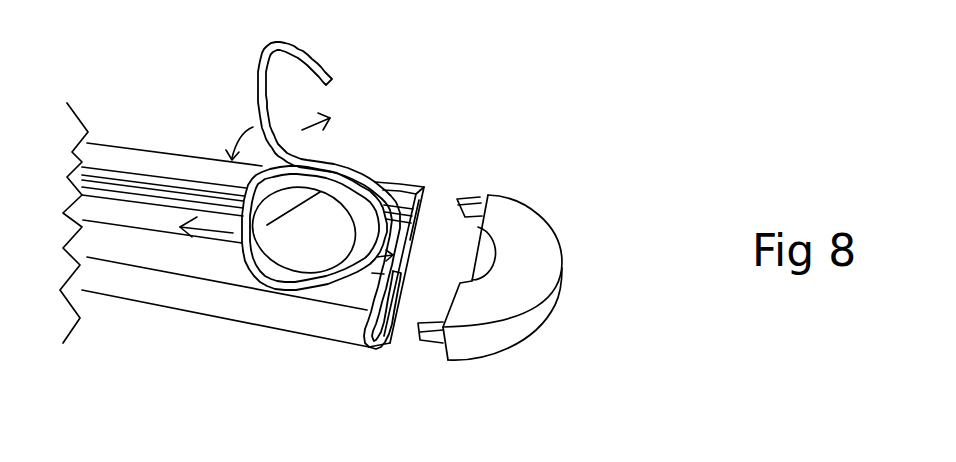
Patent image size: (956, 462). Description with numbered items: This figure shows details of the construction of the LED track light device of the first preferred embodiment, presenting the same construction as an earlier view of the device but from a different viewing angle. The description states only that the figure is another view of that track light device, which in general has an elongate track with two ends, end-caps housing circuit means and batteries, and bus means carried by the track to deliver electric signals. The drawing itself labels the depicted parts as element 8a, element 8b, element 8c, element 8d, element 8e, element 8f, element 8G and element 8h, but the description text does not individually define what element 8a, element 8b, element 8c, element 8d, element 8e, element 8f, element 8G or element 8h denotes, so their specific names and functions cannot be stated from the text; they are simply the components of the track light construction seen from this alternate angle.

The shaft / rod 8a is at (397, 184).
The retaining cap 8b is at (508, 287).
The spring clip wire 8c is at (321, 177).
The hook end of spring clip 8d is at (308, 46).
The end face of shaft 8e is at (428, 204).
The bottom edge of shaft end 8f is at (406, 305).
The tab on retaining cap 8G is at (468, 210).
The lower tab on retaining cap 8h is at (435, 340).